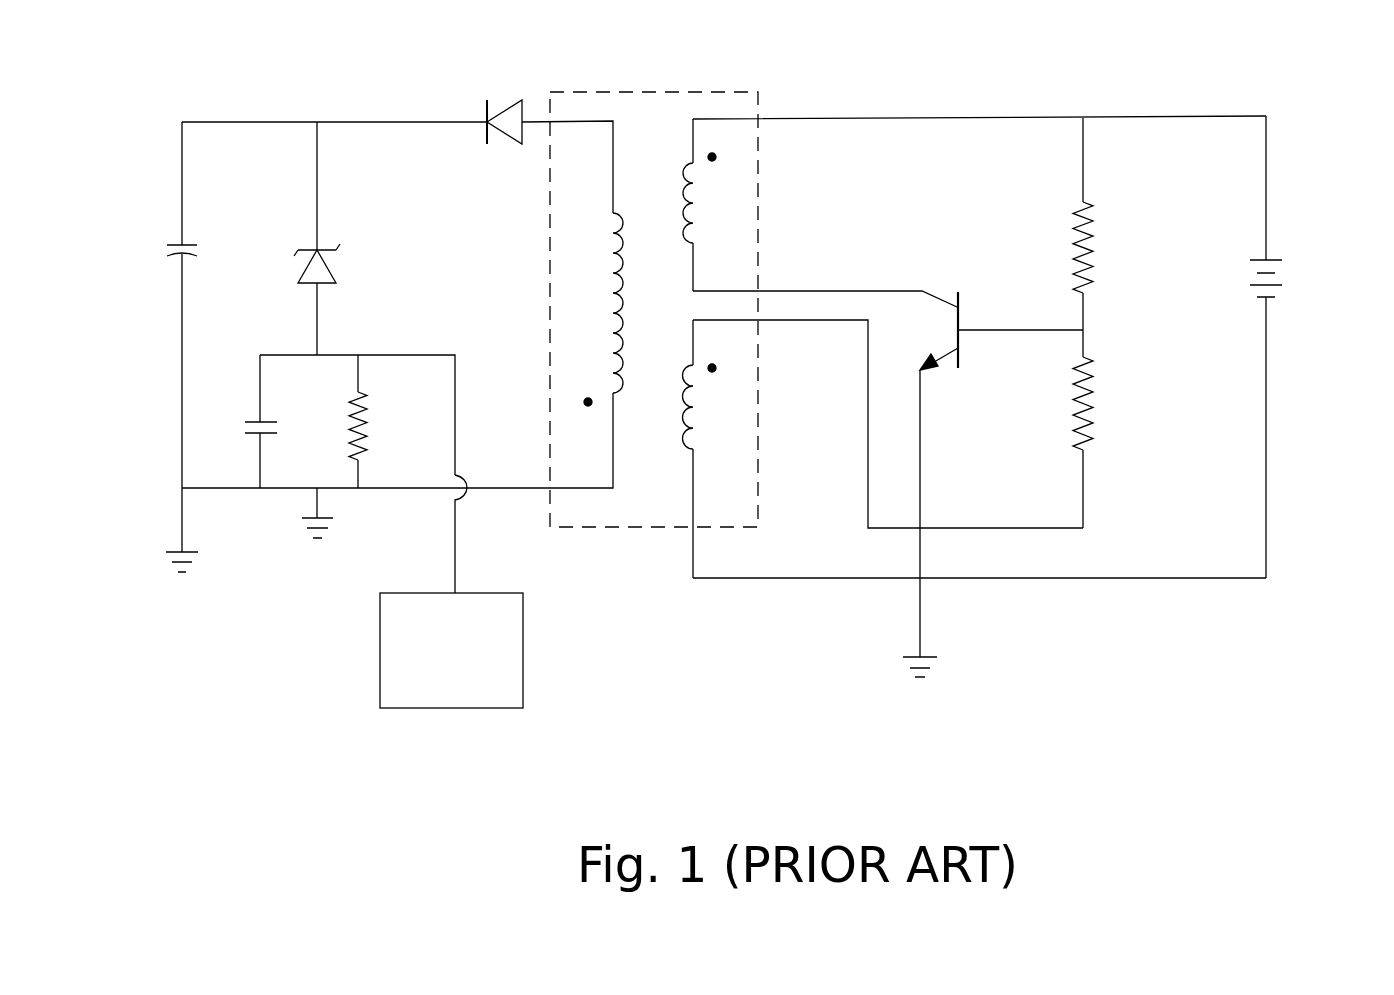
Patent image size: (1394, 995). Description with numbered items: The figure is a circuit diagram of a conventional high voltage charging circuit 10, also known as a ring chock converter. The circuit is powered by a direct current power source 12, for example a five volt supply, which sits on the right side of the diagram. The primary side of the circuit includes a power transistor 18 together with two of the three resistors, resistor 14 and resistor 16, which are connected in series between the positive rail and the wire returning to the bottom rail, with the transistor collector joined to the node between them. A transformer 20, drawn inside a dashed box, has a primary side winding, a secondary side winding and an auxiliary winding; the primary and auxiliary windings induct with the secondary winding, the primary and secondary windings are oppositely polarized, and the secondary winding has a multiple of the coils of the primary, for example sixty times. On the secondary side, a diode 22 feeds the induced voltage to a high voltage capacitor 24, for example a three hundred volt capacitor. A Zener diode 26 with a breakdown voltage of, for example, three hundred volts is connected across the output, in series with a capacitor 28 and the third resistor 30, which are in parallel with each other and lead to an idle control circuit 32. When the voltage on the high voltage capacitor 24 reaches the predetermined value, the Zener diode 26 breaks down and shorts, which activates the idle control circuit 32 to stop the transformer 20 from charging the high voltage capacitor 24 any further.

The high voltage charging circuit 10 is at (1310, 112).
The direct current power source 12 is at (1287, 278).
The resistor 14 is at (1062, 262).
The resistor 16 is at (1068, 405).
The power transistor 18 is at (953, 292).
The transformer 20 is at (630, 528).
The diode 22 is at (516, 100).
The high voltage capacitor 24 is at (166, 240).
The Zener diode 26 is at (340, 270).
The capacitor 28 is at (245, 420).
The resistor 30 is at (378, 412).
The idle control circuit 32 is at (437, 708).